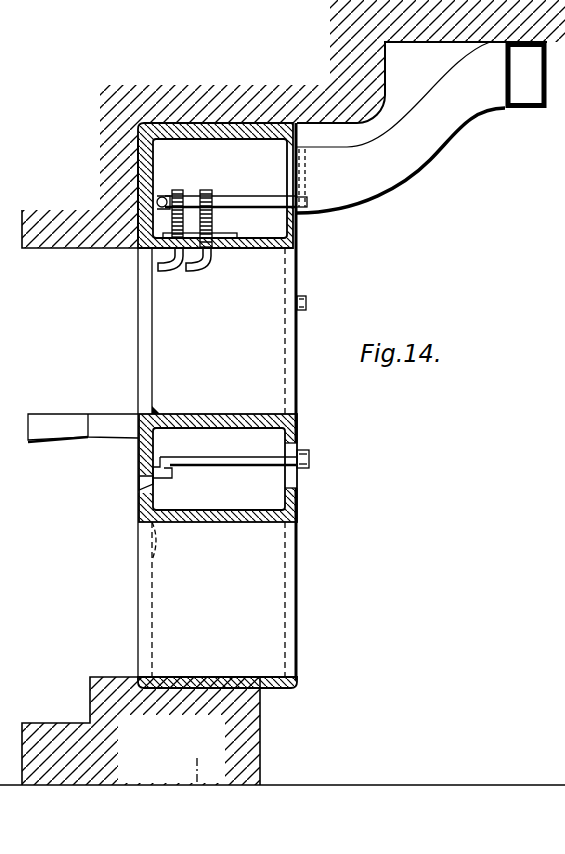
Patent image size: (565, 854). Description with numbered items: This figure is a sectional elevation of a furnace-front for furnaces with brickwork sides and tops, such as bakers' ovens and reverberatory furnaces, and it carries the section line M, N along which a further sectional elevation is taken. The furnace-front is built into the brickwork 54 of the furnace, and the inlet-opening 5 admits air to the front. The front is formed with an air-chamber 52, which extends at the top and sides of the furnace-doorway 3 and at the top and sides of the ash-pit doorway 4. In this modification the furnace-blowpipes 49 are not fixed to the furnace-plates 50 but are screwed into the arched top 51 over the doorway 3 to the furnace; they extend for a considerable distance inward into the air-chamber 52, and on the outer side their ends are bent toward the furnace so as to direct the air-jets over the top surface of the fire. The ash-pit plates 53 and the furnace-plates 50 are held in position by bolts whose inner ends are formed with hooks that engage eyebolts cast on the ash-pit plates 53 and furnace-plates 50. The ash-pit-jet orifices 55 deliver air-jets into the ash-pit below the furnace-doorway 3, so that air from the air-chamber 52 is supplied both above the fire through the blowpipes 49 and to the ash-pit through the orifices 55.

The section line M N is at (193, 140).
The brickwork 54 is at (291, 92).
The inlet-opening 5 is at (37, 257).
The furnace-plates 50 is at (137, 227).
The air-chamber 52 is at (223, 322).
The furnace-blowpipes 49 is at (212, 225).
The arched top 51 is at (270, 252).
The furnace-doorway 3 is at (222, 401).
The ash-pit plates 53 is at (139, 450).
The ash-pit-jet orifices 55 is at (143, 487).
The ash-pit doorway 4 is at (217, 605).
The section line M N M is at (205, 781).